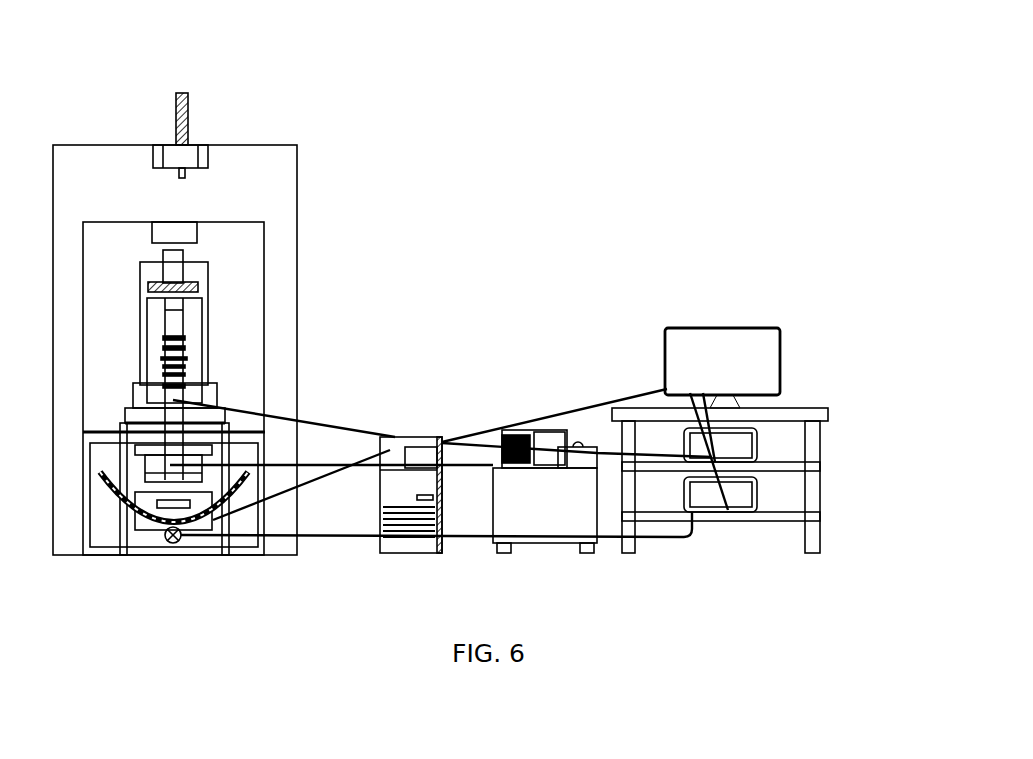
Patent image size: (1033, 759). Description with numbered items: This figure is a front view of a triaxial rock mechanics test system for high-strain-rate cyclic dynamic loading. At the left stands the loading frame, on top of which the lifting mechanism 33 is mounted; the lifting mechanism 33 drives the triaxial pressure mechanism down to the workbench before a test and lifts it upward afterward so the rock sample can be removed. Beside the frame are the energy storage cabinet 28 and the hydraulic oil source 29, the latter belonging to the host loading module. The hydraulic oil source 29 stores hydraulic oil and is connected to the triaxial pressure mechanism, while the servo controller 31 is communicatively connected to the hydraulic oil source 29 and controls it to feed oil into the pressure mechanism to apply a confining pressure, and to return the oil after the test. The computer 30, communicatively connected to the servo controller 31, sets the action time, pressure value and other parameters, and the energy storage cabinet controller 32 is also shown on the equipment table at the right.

The energy storage cabinet 28 is at (403, 437).
The hydraulic oil source 29 is at (533, 433).
The computer 30 is at (750, 368).
The servo controller 31 is at (760, 448).
The energy storage cabinet controller 32 is at (721, 522).
The lifting mechanism 33 is at (195, 108).